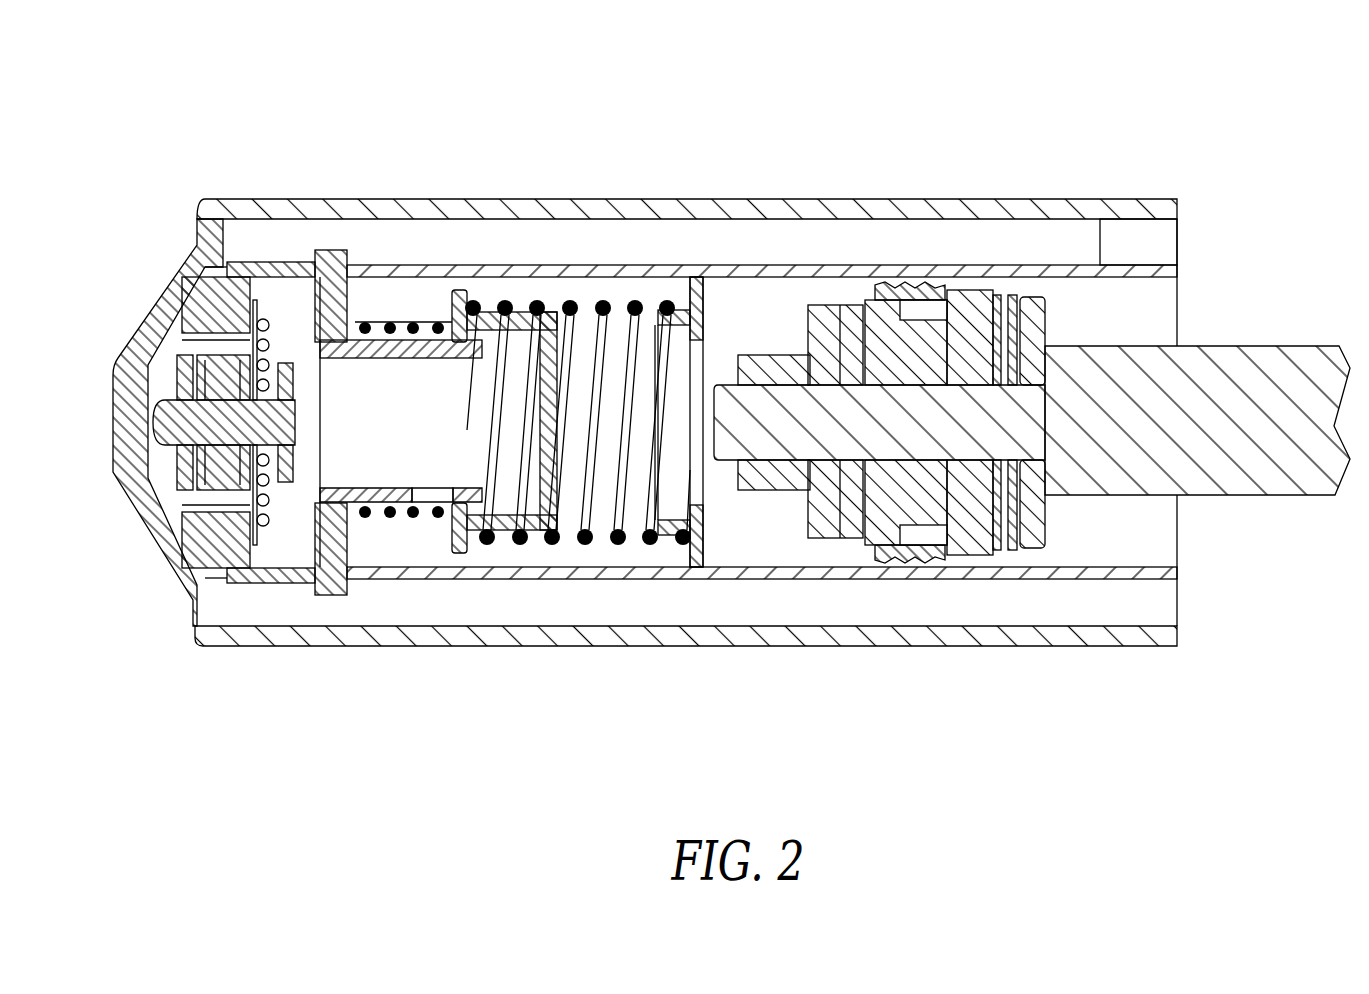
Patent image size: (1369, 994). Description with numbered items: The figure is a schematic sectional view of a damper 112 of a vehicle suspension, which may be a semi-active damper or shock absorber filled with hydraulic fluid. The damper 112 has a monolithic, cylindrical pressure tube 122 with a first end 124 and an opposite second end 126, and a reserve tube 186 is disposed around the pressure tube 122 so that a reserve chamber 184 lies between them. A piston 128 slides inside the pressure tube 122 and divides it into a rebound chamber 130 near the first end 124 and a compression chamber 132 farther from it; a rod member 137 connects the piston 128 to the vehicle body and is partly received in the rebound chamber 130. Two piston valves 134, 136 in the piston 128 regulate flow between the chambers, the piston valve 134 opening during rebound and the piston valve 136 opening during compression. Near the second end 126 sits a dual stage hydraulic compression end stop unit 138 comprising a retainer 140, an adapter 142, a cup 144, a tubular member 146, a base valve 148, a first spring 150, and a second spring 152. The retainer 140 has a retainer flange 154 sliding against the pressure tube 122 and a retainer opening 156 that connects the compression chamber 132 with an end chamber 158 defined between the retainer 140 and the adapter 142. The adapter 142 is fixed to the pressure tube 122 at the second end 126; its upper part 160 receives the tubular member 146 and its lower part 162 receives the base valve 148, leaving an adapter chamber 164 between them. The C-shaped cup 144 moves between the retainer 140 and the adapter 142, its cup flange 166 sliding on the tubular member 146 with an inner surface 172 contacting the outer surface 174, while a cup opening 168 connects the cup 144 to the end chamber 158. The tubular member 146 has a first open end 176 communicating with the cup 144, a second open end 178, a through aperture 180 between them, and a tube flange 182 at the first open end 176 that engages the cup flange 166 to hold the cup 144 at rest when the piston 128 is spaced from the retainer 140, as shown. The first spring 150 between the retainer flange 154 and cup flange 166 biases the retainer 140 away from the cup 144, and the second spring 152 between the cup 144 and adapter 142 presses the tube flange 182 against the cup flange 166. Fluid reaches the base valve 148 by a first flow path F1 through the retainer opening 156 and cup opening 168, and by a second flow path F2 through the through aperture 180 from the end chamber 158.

The damper 112 is at (1250, 143).
The pressure tube 122 is at (985, 255).
The first end 124 is at (1205, 523).
The second end 126 is at (195, 626).
The piston 128 is at (843, 285).
The rebound chamber 130 is at (1060, 540).
The compression chamber 132 is at (765, 540).
The piston valve 134 is at (935, 300).
The piston valve 136 is at (930, 540).
The rod member 137 is at (1250, 355).
The dual stage hydraulic compression end stop unit 138 is at (593, 550).
The retainer 140 is at (697, 450).
The adapter 142 is at (325, 262).
The cup 144 is at (548, 315).
The tubular member 146 is at (378, 335).
The base valve 148 is at (178, 378).
The first spring 150 is at (588, 300).
The second spring 152 is at (412, 325).
The retainer flange 154 is at (692, 272).
The retainer opening 156 is at (700, 410).
The end chamber 158 is at (617, 300).
The upper part 160 is at (345, 600).
The lower part 162 is at (228, 597).
The adapter chamber 164 is at (298, 290).
The cup flange 166 is at (455, 555).
The cup opening 168 is at (612, 355).
The inner surface 172 is at (455, 360).
The outer surface 174 is at (377, 520).
The first open end 176 is at (492, 478).
The second open end 178 is at (320, 430).
The through aperture 180 is at (433, 495).
The tube flange 182 is at (462, 340).
The reserve chamber 184 is at (1120, 240).
The reserve tube 186 is at (1088, 190).
The first flow path of fluid F1 is at (697, 375).
The second flow path of fluid F2 is at (427, 470).